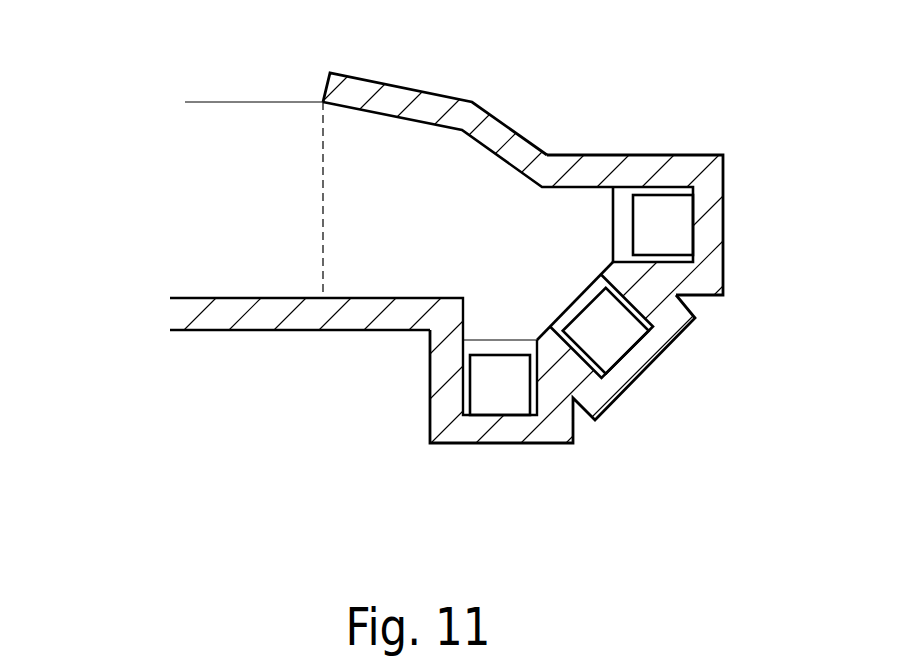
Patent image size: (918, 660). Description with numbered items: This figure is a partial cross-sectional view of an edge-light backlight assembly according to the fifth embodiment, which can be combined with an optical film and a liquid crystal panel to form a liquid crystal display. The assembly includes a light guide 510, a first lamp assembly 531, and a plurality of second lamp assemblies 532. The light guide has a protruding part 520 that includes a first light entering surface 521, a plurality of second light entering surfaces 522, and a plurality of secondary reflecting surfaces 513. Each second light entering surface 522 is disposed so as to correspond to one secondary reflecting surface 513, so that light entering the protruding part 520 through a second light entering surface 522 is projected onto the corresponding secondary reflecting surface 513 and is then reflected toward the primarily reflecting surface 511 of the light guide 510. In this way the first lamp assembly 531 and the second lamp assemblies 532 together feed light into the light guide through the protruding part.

The light guide 510 is at (285, 130).
The protruding part 520 is at (360, 258).
The primarily reflecting surface 511 is at (272, 295).
The secondary reflecting surface 513 is at (500, 160).
The first light entering surface 521 is at (612, 225).
The second light entering surface 522 is at (575, 300).
The first lamp assembly 531 is at (735, 173).
The second lamp assembly 532 is at (666, 372).